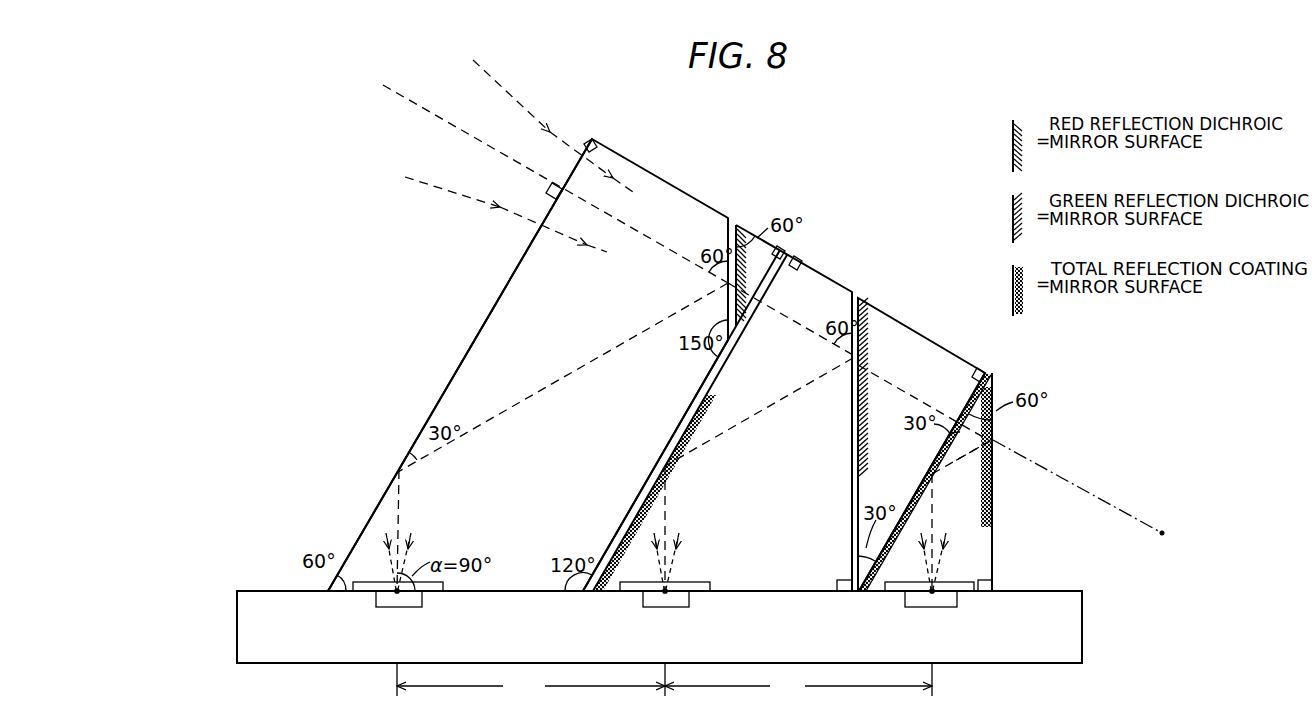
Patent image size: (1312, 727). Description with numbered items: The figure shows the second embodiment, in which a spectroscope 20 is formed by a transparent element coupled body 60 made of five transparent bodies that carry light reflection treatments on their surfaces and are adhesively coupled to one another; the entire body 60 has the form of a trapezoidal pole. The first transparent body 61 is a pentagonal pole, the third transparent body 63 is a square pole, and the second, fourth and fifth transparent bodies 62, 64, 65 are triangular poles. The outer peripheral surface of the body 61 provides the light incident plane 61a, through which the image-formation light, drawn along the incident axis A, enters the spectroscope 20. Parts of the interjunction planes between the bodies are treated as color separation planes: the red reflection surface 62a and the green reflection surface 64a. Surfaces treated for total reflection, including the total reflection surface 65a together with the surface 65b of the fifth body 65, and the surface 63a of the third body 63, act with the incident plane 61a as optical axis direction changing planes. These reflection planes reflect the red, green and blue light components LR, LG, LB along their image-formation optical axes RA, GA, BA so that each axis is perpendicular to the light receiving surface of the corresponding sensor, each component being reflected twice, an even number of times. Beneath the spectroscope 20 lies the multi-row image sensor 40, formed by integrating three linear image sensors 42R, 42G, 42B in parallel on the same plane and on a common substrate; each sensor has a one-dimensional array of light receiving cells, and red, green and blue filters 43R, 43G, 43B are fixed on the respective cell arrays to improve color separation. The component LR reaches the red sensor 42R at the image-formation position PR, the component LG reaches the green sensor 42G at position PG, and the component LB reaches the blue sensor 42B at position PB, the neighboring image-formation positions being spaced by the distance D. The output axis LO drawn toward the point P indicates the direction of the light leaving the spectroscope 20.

The spectroscope 20 is at (658, 365).
The transparent element coupled body 60 is at (658, 365).
The multi-row image sensor 40 is at (231, 614).
The first transparent body 61 is at (528, 365).
The light incident plane 61a is at (497, 297).
The second transparent body 62 is at (725, 404).
The red reflection surface 62a is at (727, 303).
The third transparent body 63 is at (722, 408).
The optical axis direction changing plane 63a is at (693, 417).
The fourth transparent body 64 is at (890, 444).
The green reflection surface 64a is at (853, 398).
The fifth transparent body 65 is at (957, 482).
The total reflection surface 65a is at (930, 470).
The total reflection coating mirror surface 65b is at (992, 521).
The red linear image sensor 42R is at (423, 599).
The red filter 43R is at (372, 596).
The green linear image sensor 42G is at (691, 599).
The green filter 43G is at (640, 596).
The blue linear image sensor 42B is at (957, 600).
The blue filter 43B is at (902, 596).
The red light emission point PR is at (397, 595).
The green light emission point PG is at (665, 595).
The blue light emission point PB is at (932, 595).
The red light component LR is at (553, 386).
The green light component LG is at (762, 419).
The blue light component LB is at (964, 464).
The output light axis LO is at (1107, 502).
The red image-formation optical axis RA is at (403, 506).
The green image-formation optical axis GA is at (668, 526).
The blue image-formation optical axis BA is at (932, 541).
The incident light axis A is at (500, 154).
The virtual emission point P is at (1163, 532).
The element pitch D is at (664, 683).